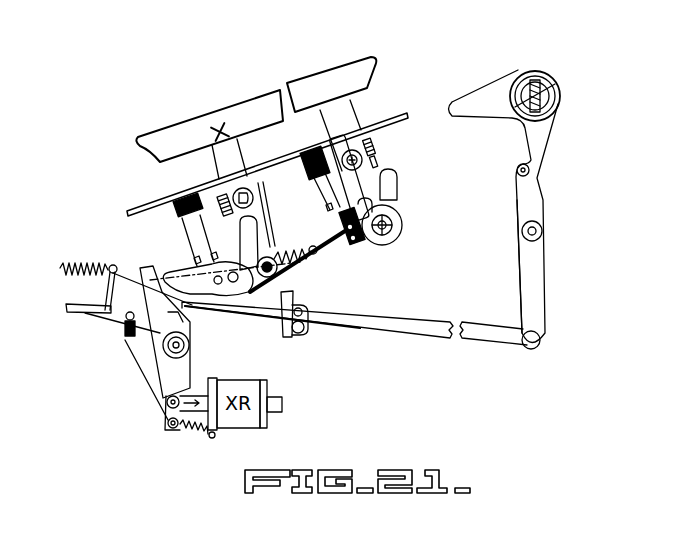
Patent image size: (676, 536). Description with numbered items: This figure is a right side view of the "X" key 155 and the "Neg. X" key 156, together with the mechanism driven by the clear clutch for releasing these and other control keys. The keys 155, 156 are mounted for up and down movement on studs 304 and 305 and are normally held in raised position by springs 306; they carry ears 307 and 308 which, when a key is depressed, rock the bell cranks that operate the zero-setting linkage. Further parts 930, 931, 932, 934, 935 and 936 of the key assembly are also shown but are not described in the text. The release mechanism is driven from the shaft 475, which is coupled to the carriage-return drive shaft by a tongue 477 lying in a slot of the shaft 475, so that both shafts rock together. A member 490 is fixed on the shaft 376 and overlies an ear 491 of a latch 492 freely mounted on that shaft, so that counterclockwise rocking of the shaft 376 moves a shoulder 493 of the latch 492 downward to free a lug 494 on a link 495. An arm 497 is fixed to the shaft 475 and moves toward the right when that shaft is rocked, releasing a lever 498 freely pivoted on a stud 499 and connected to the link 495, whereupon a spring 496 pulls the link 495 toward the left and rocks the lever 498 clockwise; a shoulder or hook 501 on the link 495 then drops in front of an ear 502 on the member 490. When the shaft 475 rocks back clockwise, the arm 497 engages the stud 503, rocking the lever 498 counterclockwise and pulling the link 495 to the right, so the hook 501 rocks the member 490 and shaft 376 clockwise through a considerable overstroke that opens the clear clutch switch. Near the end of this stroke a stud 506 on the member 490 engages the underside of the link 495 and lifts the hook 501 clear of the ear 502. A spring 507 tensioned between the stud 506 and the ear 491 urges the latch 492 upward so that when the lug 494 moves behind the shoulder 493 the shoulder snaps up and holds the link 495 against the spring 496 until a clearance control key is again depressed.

The "X" key 155 is at (217, 113).
The "Neg. X" key 156 is at (325, 75).
The springs 306 is at (226, 214).
The ear 307 is at (245, 229).
The ear 308 is at (363, 162).
The stud 304 is at (287, 281).
The stud 305 is at (385, 242).
The contact block 930 is at (345, 250).
The arm 931 is at (268, 240).
The spring 932 is at (285, 252).
The pivot 934 is at (253, 198).
The pivot 935 is at (402, 216).
The contact blade 936 is at (395, 172).
The shaft 376 is at (192, 343).
The member 490 is at (120, 333).
The ear 491 is at (133, 348).
The latch 492 is at (95, 320).
The shoulder 493 is at (68, 307).
The lug 494 is at (107, 306).
The link 495 is at (393, 322).
The spring 496 is at (98, 264).
The arm 497 is at (530, 139).
The lever 498 is at (530, 205).
The stud 499 is at (521, 232).
The shoulder (hook) 501 is at (267, 314).
The ear 502 is at (178, 312).
The stud 503 is at (516, 175).
The stud 506 is at (138, 340).
The spring 507 is at (124, 338).
The shaft 475 is at (543, 98).
The tongue 477 is at (537, 82).